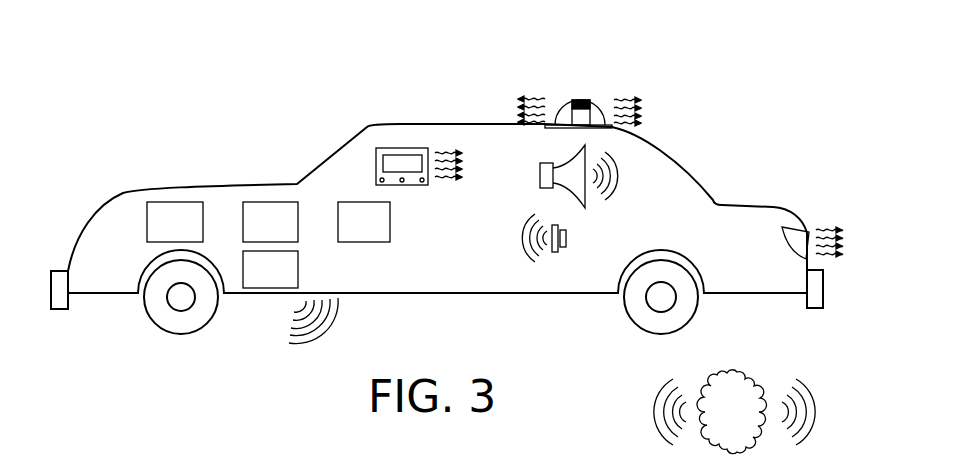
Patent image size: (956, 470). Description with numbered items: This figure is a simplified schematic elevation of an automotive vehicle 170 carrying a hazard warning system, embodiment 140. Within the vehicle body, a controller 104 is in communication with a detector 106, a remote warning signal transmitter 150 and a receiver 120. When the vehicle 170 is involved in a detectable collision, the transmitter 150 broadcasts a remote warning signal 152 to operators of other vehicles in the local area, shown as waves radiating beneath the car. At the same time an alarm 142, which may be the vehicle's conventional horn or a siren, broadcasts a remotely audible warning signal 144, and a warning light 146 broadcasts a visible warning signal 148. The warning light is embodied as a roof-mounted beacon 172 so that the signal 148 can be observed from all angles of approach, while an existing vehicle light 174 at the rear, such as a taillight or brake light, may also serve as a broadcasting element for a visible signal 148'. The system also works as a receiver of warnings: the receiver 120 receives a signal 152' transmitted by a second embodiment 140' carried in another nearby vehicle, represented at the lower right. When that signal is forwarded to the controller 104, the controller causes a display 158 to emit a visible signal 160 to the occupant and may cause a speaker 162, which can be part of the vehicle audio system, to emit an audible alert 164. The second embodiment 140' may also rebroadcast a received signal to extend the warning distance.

The automotive vehicle 170 is at (102, 177).
The detector 106 is at (175, 222).
The receiver 120 is at (270, 222).
The remote warning signal transmitter 150 is at (270, 269).
The controller 104 is at (364, 222).
The display 158 is at (395, 158).
The visible signal 160 is at (450, 150).
The roof-mounted beacon 172 is at (568, 97).
The warning signal 148 is at (553, 85).
The warning light 146 is at (632, 72).
The hazard warning system embodiment 140 is at (792, 107).
The alarm 142 is at (540, 175).
The sonic signal 144 is at (617, 190).
The speaker 162 is at (556, 253).
The audible alert 164 is at (523, 252).
The remote warning signal 152 is at (336, 328).
The vehicle light 174 is at (808, 230).
The visible signal 148' is at (866, 256).
The second embodiment 140' is at (750, 383).
The received signal 152' is at (637, 412).